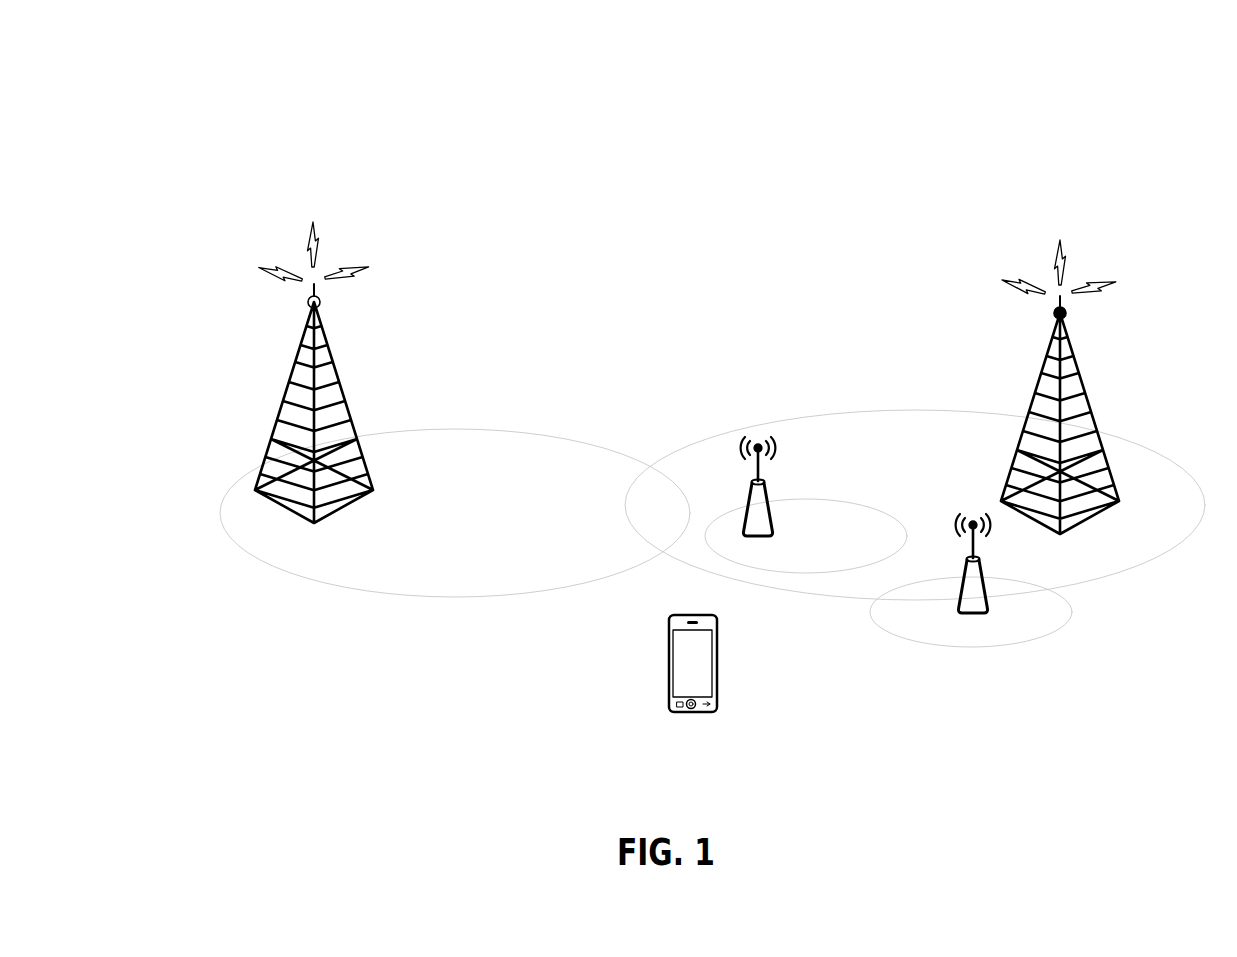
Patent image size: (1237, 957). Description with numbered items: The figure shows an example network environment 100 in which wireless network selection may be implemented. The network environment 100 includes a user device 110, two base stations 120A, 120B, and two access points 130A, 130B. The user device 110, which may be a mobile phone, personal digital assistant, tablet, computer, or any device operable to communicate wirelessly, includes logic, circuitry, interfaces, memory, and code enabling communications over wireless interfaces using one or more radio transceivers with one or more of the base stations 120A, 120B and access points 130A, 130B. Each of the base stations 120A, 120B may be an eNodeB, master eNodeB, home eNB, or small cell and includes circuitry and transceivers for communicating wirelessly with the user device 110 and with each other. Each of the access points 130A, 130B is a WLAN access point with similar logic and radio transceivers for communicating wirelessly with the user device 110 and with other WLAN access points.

The network environment 100 is at (310, 132).
The user device 110 is at (674, 616).
The base station 120A is at (353, 422).
The base station 120B is at (1100, 433).
The access point 130A is at (763, 482).
The access point 130B is at (976, 552).